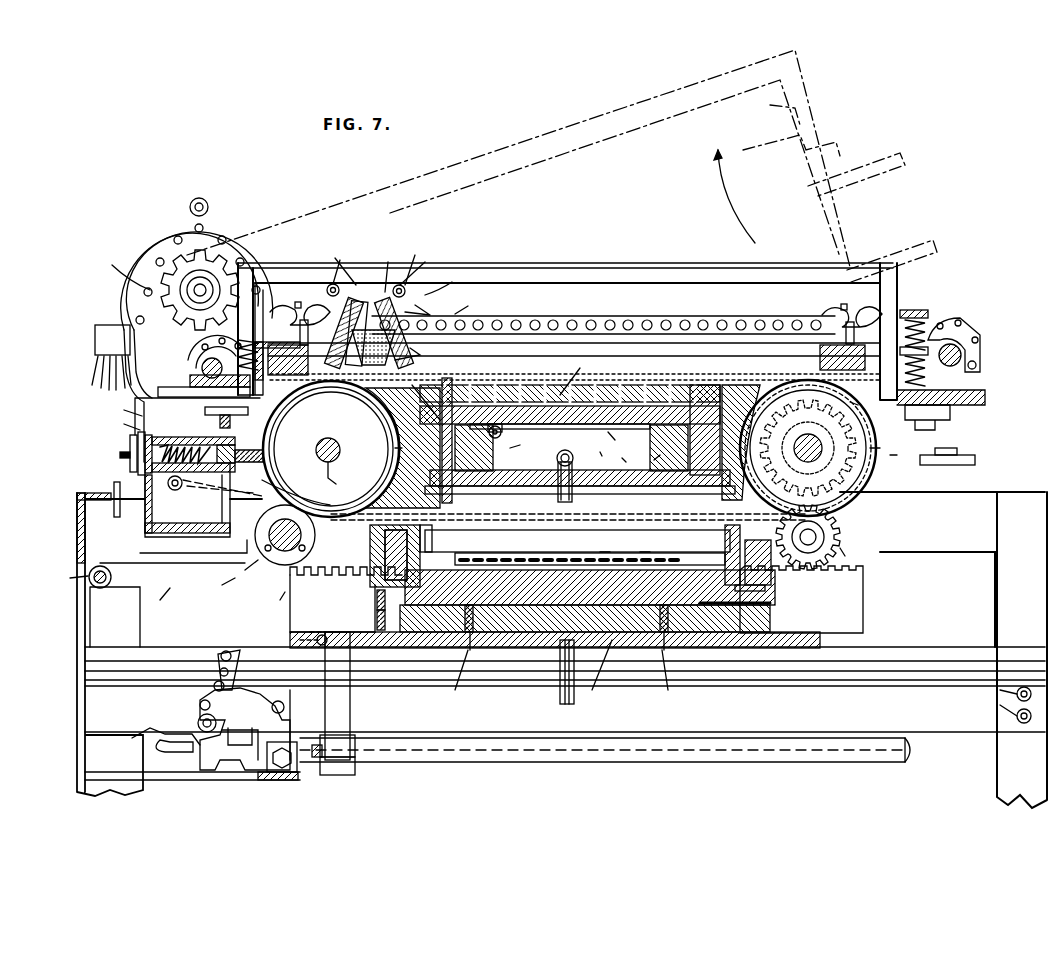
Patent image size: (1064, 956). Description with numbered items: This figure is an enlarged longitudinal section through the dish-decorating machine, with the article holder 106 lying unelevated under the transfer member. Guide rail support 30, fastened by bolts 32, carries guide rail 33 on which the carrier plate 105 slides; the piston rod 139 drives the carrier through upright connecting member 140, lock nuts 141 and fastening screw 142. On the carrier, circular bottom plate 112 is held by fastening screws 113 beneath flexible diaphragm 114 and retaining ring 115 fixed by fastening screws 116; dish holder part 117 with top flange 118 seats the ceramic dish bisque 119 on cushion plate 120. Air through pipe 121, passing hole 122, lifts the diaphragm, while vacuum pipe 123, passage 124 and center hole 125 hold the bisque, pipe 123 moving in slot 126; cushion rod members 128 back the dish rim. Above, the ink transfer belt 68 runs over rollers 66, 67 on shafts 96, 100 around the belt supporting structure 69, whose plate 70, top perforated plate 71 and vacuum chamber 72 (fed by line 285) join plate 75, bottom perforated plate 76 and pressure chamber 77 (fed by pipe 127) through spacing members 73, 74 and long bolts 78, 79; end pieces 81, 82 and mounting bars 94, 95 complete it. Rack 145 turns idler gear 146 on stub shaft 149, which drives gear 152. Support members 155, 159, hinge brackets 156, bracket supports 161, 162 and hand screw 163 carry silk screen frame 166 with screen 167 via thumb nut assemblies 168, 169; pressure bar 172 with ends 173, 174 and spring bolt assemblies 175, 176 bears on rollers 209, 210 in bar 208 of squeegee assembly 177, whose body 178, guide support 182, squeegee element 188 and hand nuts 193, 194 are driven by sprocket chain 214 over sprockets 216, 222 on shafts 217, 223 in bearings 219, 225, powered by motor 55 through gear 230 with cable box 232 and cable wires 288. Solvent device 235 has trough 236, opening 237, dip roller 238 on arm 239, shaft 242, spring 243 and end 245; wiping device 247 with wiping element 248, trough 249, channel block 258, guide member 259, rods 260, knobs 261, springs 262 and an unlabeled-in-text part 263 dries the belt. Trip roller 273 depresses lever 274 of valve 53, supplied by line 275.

The guide rail support 30 is at (940, 730).
The bolts 32 is at (1001, 705).
The support guide rail 33 is at (915, 652).
The operating valve 53 is at (292, 718).
The squeegee operating motor 55 is at (222, 218).
The ink transfer belt roller 66 is at (296, 410).
The idler transfer belt roller 67 is at (863, 397).
The ink transfer belt 68 is at (498, 520).
The transfer belt supporting structure 69 is at (616, 451).
The plate 70 is at (528, 424).
The top perforated plate 71 is at (575, 372).
The vacuum chamber 72 is at (515, 382).
The vertical spacing member 73 is at (484, 455).
The vertical spacing member 74 is at (608, 432).
The plate 75 is at (515, 470).
The bottom perforated plate 76 is at (595, 446).
The pressure chamber 77 is at (545, 486).
The long bolt 78 is at (432, 382).
The long bolt 79 is at (700, 390).
The concave transverse end piece 81 is at (395, 430).
The concave transverse end piece 82 is at (752, 390).
The mounting bar 94 is at (483, 436).
The mounting bar 95 is at (658, 439).
The central drive shaft 96 is at (342, 477).
The central shaft 100 is at (845, 500).
The carrier plate 105 is at (820, 640).
The article holder 106 is at (368, 568).
The circular bottom plate 112 is at (770, 618).
The fastening screws 113 is at (573, 655).
The flexible diaphragm 114 is at (770, 603).
The retaining ring 115 is at (372, 598).
The fastening screws 116 is at (372, 617).
The dish holder part 117 is at (445, 575).
The top flange 118 is at (370, 533).
The ceramic dish bisque 119 is at (567, 555).
The cushion plate 120 is at (660, 562).
The pipe 121 is at (560, 696).
The large hole 122 is at (604, 673).
The vacuum pipe 123 is at (765, 590).
The passage 124 is at (636, 543).
The center hole 125 is at (604, 543).
The slot 126 is at (770, 600).
The pipe 127 is at (575, 443).
The cushion rod members 128 is at (425, 540).
The piston rod 139 is at (560, 768).
The upright connecting member 140 is at (352, 700).
The lock nuts 141 is at (348, 778).
The fastening screw 142 is at (310, 636).
The rack 145 is at (863, 596).
The idler gear 146 is at (845, 556).
The stub shaft 149 is at (825, 538).
The gear 152 is at (872, 448).
The silk screen support member 155 is at (288, 378).
The hinge brackets 156 is at (212, 428).
The silk screen transverse support member 159 is at (815, 164).
The bracket support 161 is at (830, 222).
The bracket support 162 is at (958, 420).
The hand screw 163 is at (975, 450).
The silk screen frame 166 is at (640, 356).
The screen 167 is at (545, 368).
The thumb nut assembly 168 is at (302, 315).
The thumb nut assembly 169 is at (862, 325).
The pressure bar 172 is at (515, 152).
The depending end 173 is at (258, 282).
The depending end 174 is at (898, 300).
The balance spring bolt assembly 175 is at (196, 346).
The balance spring bolt assembly 176 is at (928, 325).
The squeegee assembly 177 is at (431, 310).
The inverted channel body 178 is at (469, 302).
The central guide support 182 is at (377, 303).
The squeegee element 188 is at (417, 346).
The hand nut 193 is at (354, 298).
The hand nut 194 is at (401, 297).
The spaced bar 208 is at (441, 279).
The roller 209 is at (332, 269).
The roller 210 is at (421, 269).
The squeegee driving sprocket chain 214 is at (525, 318).
The drive sprocket 216 is at (190, 357).
The drive shaft 217 is at (196, 367).
The bearing 219 is at (190, 381).
The idler sprocket 222 is at (984, 330).
The shaft 223 is at (955, 345).
The bearing 225 is at (976, 362).
The gear 230 is at (121, 269).
The cable box 232 is at (98, 336).
The solvent-containing roller device 235 is at (208, 595).
The trough 236 is at (266, 602).
The inclined top opening 237 is at (296, 478).
The dip roller 238 is at (268, 568).
The supporting arm 239 is at (162, 600).
The shaft 242 is at (108, 563).
The tensioned coil spring 243 is at (62, 575).
The spring end 245 is at (120, 632).
The wiping device 247 is at (150, 480).
The wiping element 248 is at (308, 450).
The trough 249 is at (158, 508).
The channel block 258 is at (190, 432).
The guide member 259 is at (118, 444).
The threaded rods 260 is at (120, 455).
The adjusting knobs 261 is at (128, 440).
The pressure springs 262 is at (117, 409).
The pin 263 is at (114, 490).
The trip roller 273 is at (220, 648).
The lever 274 is at (195, 700).
The supply pipe line 275 is at (200, 758).
The line 285 is at (506, 450).
The cable wires 288 is at (98, 368).